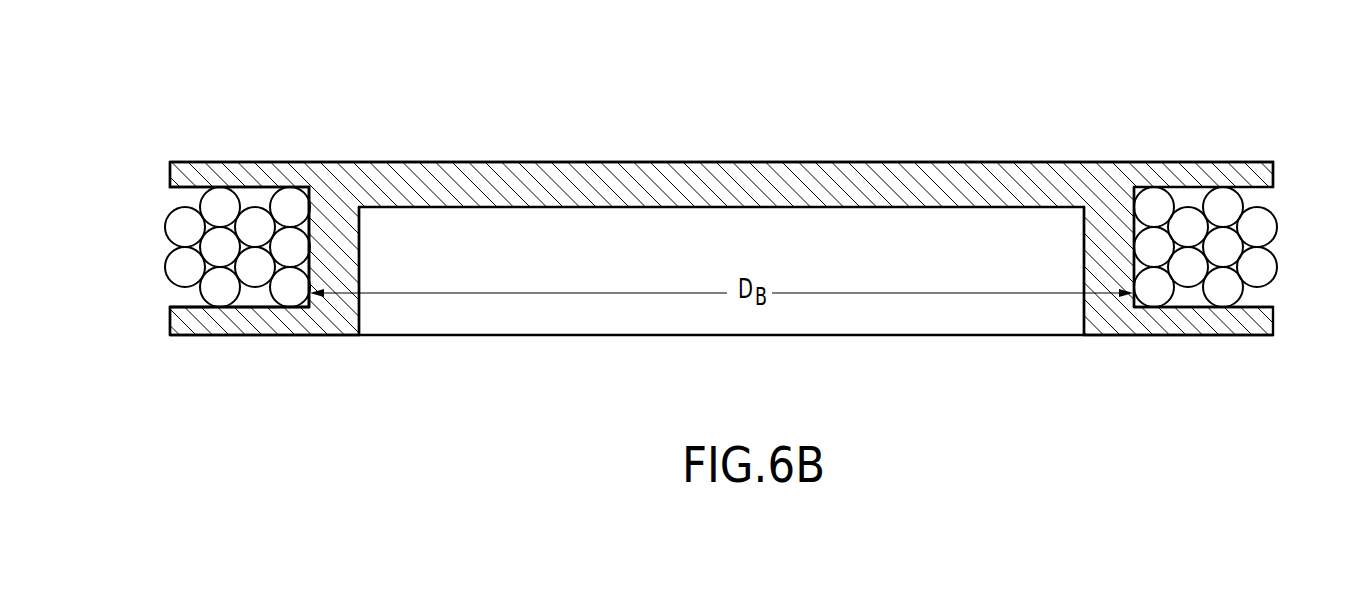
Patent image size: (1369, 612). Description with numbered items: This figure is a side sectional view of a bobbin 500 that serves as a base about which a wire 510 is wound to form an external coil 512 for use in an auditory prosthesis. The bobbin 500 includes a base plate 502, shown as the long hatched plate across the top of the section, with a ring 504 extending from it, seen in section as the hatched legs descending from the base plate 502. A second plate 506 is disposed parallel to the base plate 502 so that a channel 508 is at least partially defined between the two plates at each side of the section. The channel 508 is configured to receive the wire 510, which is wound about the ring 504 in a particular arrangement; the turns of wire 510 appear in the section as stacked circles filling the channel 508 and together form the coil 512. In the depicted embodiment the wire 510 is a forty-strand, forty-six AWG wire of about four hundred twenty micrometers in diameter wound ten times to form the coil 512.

The bobbin 500 is at (1118, 93).
The base plate 502 is at (945, 161).
The ring 504 is at (342, 265).
The second plate 506 is at (1147, 334).
The channel 508 is at (127, 253).
The wire 510 is at (228, 292).
The external coil 512 is at (258, 119).